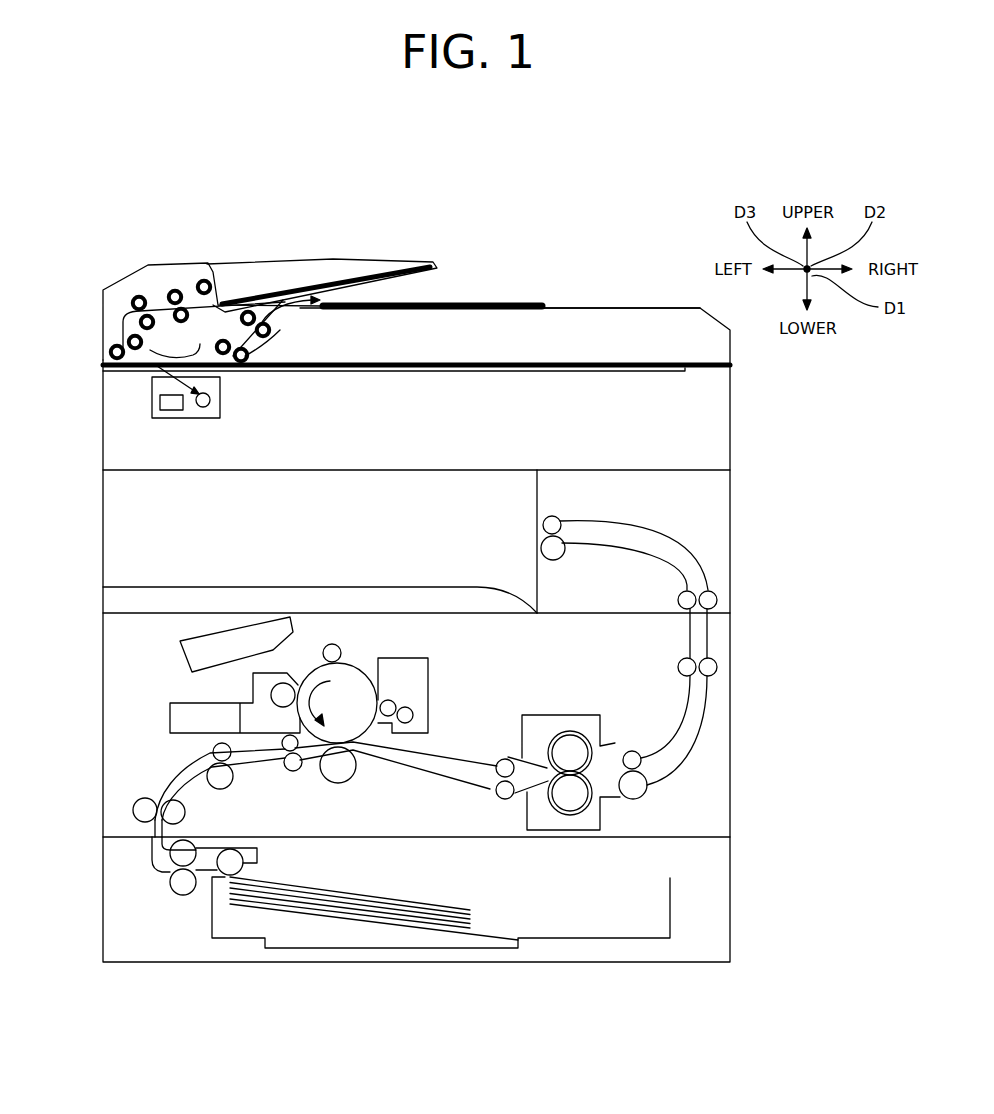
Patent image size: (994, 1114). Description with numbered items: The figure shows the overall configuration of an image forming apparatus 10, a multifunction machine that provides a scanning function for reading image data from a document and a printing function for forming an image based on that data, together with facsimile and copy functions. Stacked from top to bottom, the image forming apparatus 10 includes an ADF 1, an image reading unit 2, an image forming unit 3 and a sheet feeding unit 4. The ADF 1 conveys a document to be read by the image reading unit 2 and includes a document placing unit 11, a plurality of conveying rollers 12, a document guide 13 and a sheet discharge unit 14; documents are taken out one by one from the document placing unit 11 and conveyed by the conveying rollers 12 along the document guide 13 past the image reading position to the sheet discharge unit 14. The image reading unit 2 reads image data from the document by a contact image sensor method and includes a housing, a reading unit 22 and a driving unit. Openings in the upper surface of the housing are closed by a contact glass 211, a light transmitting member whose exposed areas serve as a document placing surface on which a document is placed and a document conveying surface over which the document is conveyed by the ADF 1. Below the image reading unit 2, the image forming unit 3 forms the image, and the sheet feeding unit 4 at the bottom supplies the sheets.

The image forming apparatus 10 is at (92, 228).
The ADF 1 is at (103, 316).
The document placing unit 11 is at (283, 268).
The conveying rollers 12 is at (139, 296).
The document guide 13 is at (172, 393).
The sheet discharge unit 14 is at (600, 308).
The image reading unit 2 is at (103, 432).
The contact glass 211 is at (597, 372).
The reading unit 22 is at (242, 412).
The image forming unit 3 is at (124, 633).
The sheet feeding unit 4 is at (103, 904).